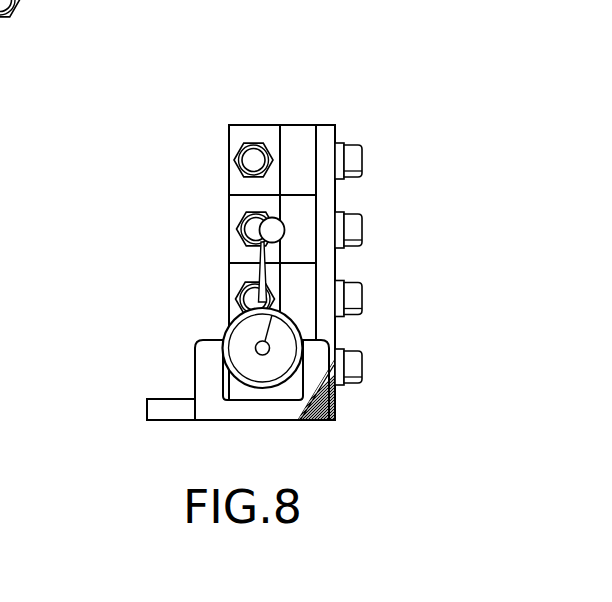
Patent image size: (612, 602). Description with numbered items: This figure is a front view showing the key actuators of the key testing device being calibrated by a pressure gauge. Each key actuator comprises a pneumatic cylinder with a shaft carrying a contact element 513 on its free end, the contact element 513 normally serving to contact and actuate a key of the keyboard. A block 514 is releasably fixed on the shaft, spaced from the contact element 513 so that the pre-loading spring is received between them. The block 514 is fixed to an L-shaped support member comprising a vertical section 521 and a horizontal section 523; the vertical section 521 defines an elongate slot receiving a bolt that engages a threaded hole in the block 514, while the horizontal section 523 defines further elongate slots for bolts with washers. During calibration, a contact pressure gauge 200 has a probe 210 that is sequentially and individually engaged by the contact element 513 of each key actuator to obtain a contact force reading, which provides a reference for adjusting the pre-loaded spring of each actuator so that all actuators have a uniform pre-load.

The contact pressure gauge 200 is at (292, 383).
The probe 210 is at (259, 274).
The contact element 513 is at (250, 150).
The block 514 is at (306, 152).
The vertical section 521 is at (335, 163).
The horizontal section 523 is at (170, 411).